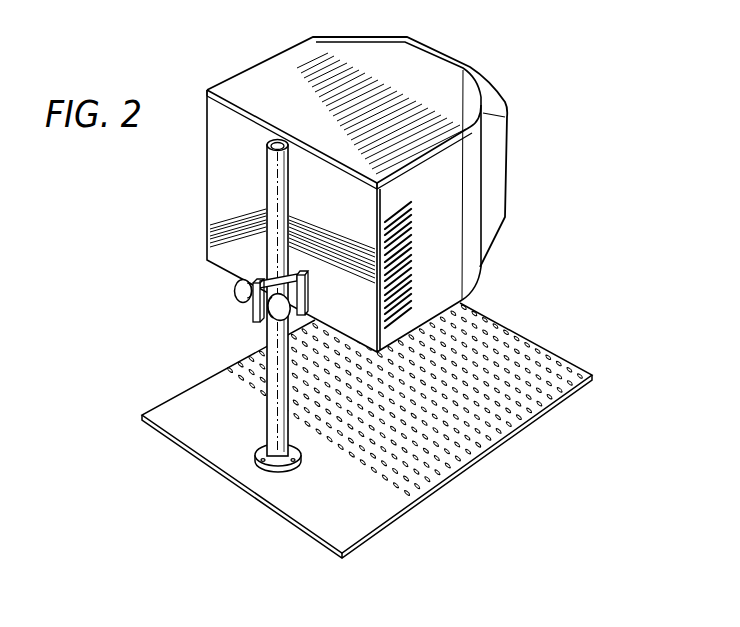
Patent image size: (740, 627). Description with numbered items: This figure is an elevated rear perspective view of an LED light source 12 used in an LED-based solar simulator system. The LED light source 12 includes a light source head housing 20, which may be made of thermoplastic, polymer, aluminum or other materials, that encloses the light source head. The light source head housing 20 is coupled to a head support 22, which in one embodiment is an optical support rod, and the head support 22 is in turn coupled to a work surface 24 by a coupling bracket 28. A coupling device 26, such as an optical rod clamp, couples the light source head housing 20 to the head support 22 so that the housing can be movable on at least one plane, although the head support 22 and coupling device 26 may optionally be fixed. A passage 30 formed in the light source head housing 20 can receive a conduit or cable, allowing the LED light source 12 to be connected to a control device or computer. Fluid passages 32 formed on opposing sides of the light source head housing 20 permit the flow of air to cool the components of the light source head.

The LED light source 12 is at (612, 154).
The light source head housing 20 is at (258, 78).
The head support 22 is at (268, 403).
The work surface 24 is at (560, 375).
The coupling device 26 is at (236, 290).
The coupling bracket 28 is at (257, 458).
The passage 30 is at (222, 211).
The fluid passages 32 is at (410, 233).